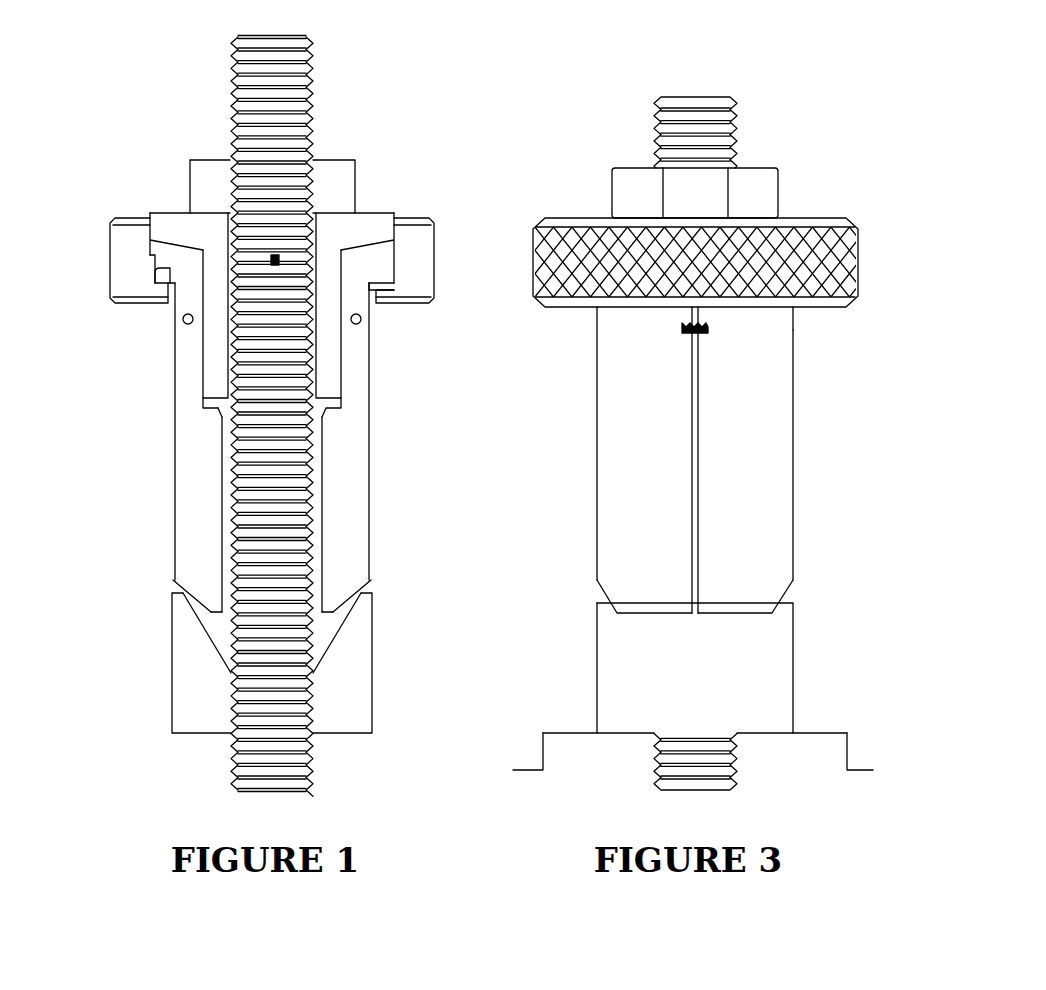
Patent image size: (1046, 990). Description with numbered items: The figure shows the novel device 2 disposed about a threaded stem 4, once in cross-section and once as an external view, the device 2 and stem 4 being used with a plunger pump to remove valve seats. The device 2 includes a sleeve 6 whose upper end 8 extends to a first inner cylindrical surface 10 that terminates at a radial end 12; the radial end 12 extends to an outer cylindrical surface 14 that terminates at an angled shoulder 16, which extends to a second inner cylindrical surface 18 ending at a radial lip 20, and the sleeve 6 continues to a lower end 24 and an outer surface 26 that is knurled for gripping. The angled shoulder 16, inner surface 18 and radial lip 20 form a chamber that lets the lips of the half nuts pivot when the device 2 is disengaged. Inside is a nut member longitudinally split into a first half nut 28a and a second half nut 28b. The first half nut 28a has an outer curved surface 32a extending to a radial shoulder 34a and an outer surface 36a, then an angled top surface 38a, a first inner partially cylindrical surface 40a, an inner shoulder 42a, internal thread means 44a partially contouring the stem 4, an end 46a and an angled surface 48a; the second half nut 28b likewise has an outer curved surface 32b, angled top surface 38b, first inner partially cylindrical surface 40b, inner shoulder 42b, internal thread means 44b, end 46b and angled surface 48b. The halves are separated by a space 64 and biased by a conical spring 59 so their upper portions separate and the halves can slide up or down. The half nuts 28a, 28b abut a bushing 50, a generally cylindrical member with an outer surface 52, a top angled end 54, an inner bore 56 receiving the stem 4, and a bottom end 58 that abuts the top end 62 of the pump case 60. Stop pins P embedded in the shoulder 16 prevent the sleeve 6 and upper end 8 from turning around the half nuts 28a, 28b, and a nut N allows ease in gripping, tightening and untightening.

In FIG. 1, the device 2 is at (427, 450).
In FIG. 3, the device 2 is at (837, 450).
In FIG. 1, the threaded stem 4 is at (178, 57).
In FIG. 3, the threaded stem 4 is at (795, 110).
In FIG. 1, the sleeve 6 is at (120, 243).
In FIG. 3, the sleeve 6 is at (807, 240).
In FIG. 1, the upper end 8 is at (160, 207).
In FIG. 1, the first inner cylindrical surface 10 is at (238, 168).
In FIG. 1, the radial end 12 is at (207, 408).
In FIG. 1, the outer cylindrical surface 14 is at (203, 373).
In FIG. 1, the angled shoulder 16 is at (333, 258).
In FIG. 1, the second inner cylindrical surface 18 is at (392, 257).
In FIG. 1, the radial lip 20 is at (388, 293).
In FIG. 1, the lower end 24 is at (390, 307).
In FIG. 3, the lower end 24 is at (812, 307).
In FIG. 1, the outer surface 26 is at (110, 270).
In FIG. 3, the outer surface 26 is at (860, 257).
In FIG. 1, the first half nut 28a is at (193, 539).
In FIG. 1, the second half nut 28b is at (355, 513).
In FIG. 1, the outer curved surface 32a is at (175, 468).
In FIG. 3, the outer curved surface 32a is at (622, 447).
In FIG. 1, the outer curved surface 32b is at (372, 485).
In FIG. 3, the outer curved surface 32b is at (785, 488).
In FIG. 1, the radial shoulder 34a is at (153, 268).
In FIG. 1, the outer surface 36a is at (150, 240).
In FIG. 1, the angled top surface 38a is at (180, 245).
In FIG. 1, the angled top surface 38b is at (373, 245).
In FIG. 1, the first inner partially cylindrical surface 40a is at (228, 340).
In FIG. 1, the first inner partially cylindrical surface 40b is at (343, 340).
In FIG. 1, the inner shoulder 42a is at (215, 430).
In FIG. 1, the inner shoulder 42b is at (327, 430).
In FIG. 1, the internal thread means 44a is at (228, 508).
In FIG. 1, the internal thread means 44b is at (315, 548).
In FIG. 1, the end 46a is at (205, 600).
In FIG. 1, the end 46b is at (340, 600).
In FIG. 1, the angled surface 48a is at (172, 593).
In FIG. 3, the angled surface 48a is at (605, 590).
In FIG. 1, the angled surface 48b is at (353, 607).
In FIG. 3, the angled surface 48b is at (788, 590).
In FIG. 1, the bushing 50 is at (180, 685).
In FIG. 3, the bushing 50 is at (775, 697).
In FIG. 1, the outer surface 52 is at (180, 661).
In FIG. 3, the outer surface 52 is at (796, 657).
In FIG. 1, the top angled end 54 is at (223, 647).
In FIG. 1, the inner bore 56 is at (270, 693).
In FIG. 1, the bottom end 58 is at (193, 733).
In FIG. 3, the bottom end 58 is at (628, 733).
In FIG. 1, the spring 59 is at (187, 327).
In FIG. 3, the spring 59 is at (703, 332).
In FIG. 3, the pump case 60 is at (721, 765).
In FIG. 3, the top end 62 is at (570, 733).
In FIG. 3, the space 64 is at (695, 398).
In FIG. 1, the nut N is at (350, 173).
In FIG. 3, the nut N is at (630, 175).
In FIG. 1, the stop pin P is at (275, 255).